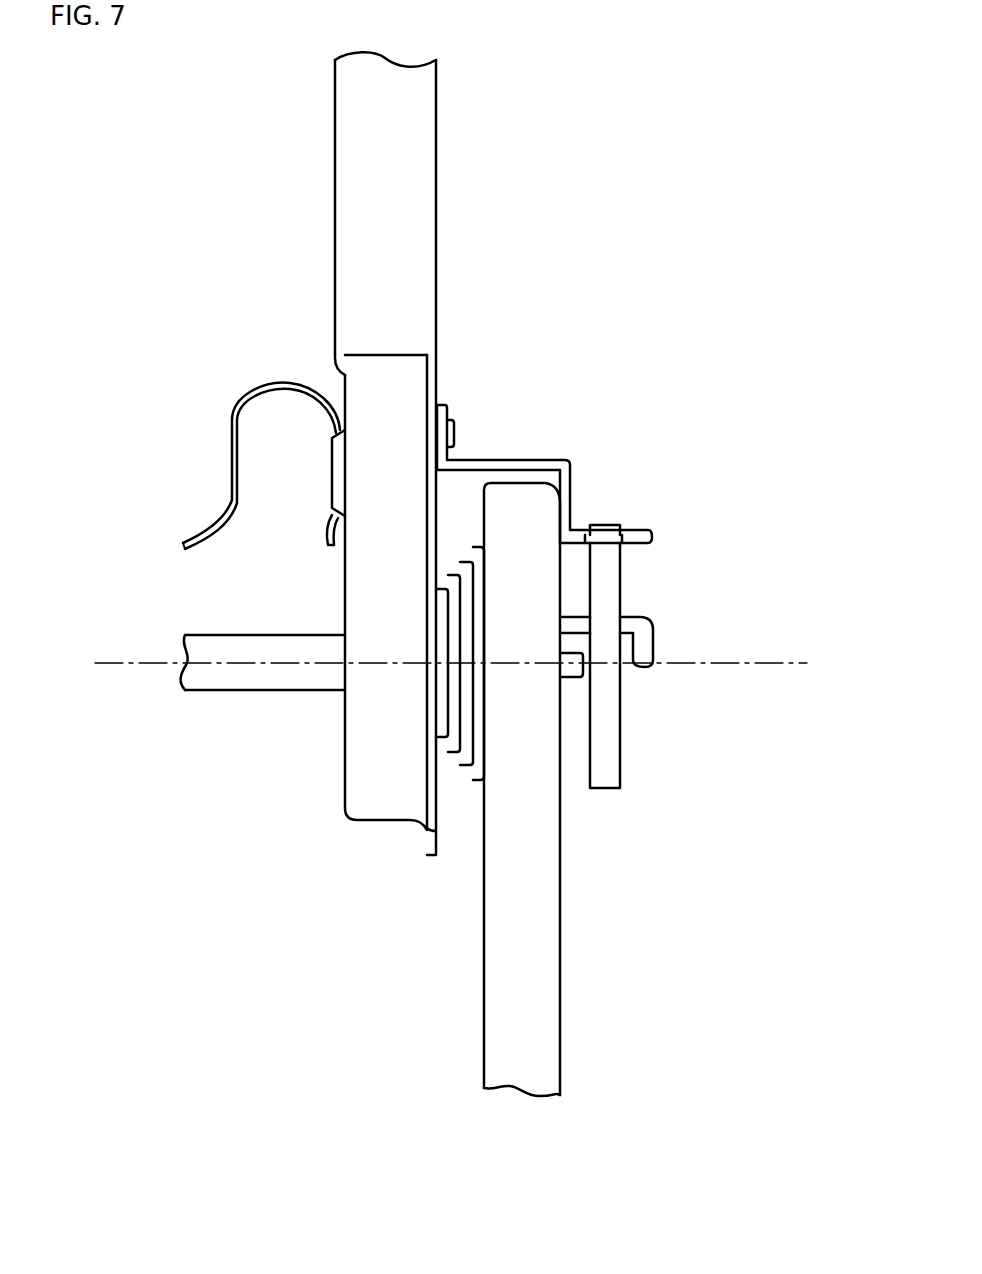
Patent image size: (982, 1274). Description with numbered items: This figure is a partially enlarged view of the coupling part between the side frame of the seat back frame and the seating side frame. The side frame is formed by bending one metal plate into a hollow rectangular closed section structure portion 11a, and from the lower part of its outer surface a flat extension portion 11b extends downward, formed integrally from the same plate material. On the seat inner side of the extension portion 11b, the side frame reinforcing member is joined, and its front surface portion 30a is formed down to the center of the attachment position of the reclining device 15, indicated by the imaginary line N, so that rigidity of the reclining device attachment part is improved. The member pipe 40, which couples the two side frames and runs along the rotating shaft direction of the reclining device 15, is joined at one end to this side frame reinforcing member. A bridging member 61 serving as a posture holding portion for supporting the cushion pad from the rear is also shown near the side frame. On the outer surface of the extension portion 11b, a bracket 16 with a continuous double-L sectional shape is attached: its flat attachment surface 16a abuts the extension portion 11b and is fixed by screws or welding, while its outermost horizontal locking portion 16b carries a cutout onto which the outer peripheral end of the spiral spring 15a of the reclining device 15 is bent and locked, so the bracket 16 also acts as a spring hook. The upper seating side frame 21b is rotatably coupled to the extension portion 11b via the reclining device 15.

The closed section structure portion 11a is at (412, 177).
The extension portion 11b is at (436, 383).
The front surface portion 30a is at (380, 800).
The member pipe 40 is at (270, 680).
The bridging member 61 is at (240, 405).
The bracket 16 is at (572, 482).
The attachment surface 16a is at (448, 407).
The locking portion 16b is at (653, 537).
The reclining device 15 is at (712, 580).
The spiral spring 15a is at (620, 757).
The upper seating side frame 21b is at (543, 930).
The imaginary line N is at (463, 666).